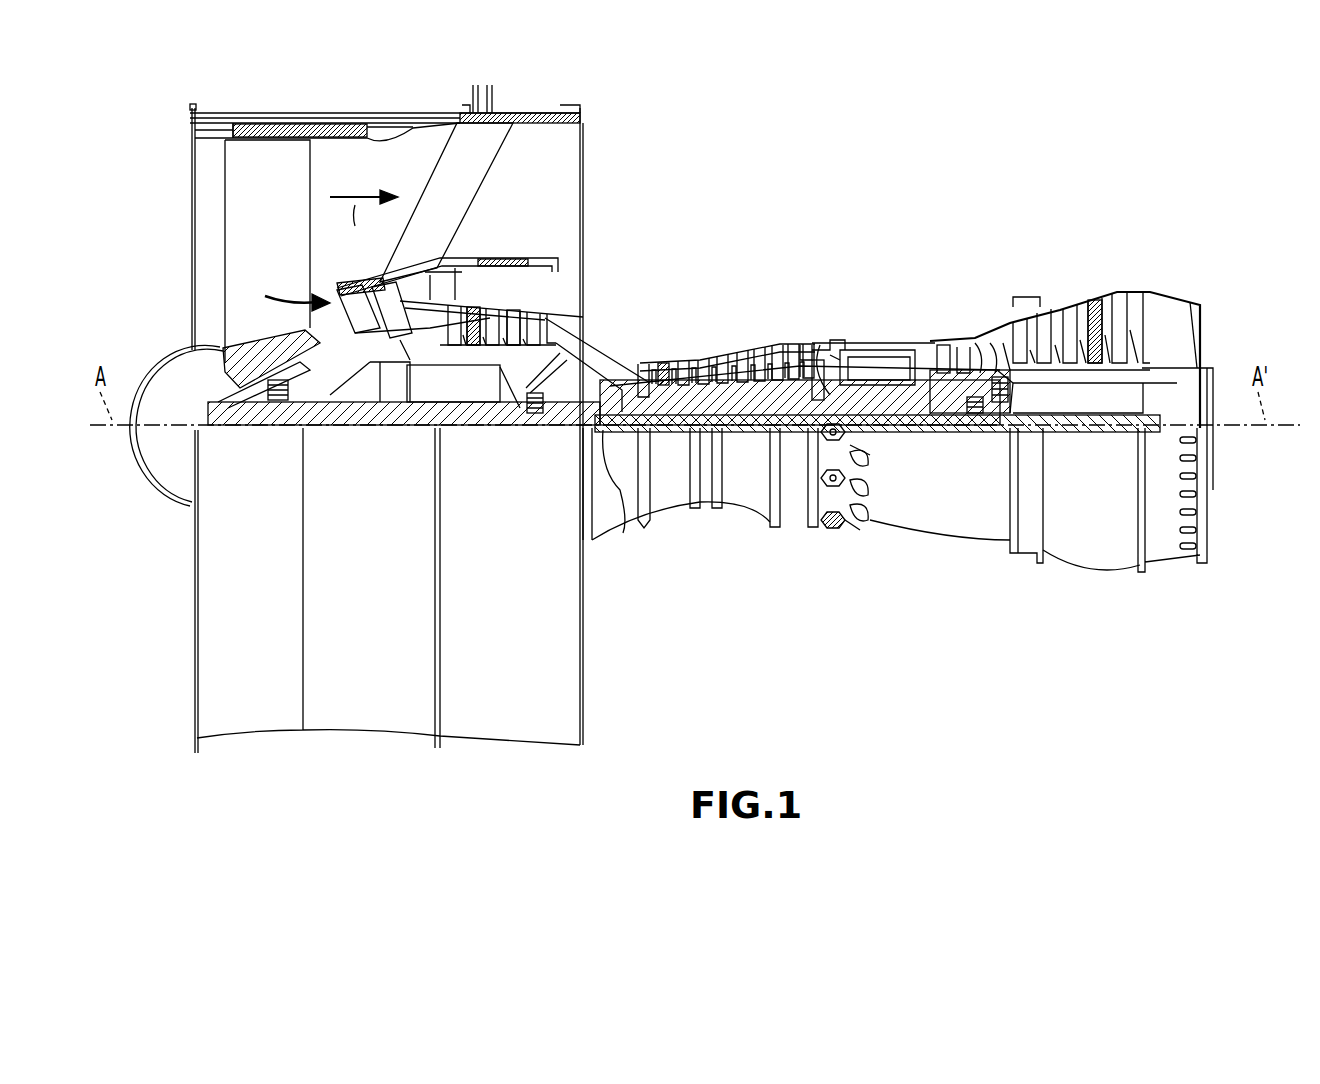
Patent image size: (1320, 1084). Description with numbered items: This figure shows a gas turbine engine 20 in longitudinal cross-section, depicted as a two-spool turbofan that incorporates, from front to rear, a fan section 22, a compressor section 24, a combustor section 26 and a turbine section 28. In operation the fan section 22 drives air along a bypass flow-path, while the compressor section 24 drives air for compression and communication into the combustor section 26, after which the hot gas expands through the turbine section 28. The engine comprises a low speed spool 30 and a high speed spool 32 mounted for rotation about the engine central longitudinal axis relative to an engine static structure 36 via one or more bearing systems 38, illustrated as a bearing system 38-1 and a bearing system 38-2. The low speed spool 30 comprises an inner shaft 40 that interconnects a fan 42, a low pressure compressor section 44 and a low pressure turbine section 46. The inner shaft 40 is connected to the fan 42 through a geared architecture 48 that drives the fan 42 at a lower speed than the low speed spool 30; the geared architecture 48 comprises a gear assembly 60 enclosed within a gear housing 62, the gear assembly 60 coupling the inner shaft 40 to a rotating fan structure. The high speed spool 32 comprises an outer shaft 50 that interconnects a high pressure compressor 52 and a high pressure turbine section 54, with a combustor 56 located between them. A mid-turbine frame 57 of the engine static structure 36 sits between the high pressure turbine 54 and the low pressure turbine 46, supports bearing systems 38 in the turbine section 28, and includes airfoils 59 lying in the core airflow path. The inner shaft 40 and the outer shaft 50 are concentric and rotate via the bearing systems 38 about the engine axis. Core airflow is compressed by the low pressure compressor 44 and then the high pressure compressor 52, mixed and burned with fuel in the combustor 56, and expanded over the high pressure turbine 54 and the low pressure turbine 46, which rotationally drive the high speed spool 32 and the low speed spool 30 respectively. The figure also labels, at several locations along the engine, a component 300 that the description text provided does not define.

The gas turbine engine 20 is at (930, 146).
The fan section 22 is at (428, 99).
The compressor section 24 is at (440, 229).
The combustor section 26 is at (925, 229).
The turbine section 28 is at (1145, 229).
The low speed spool 30 is at (745, 480).
The high speed spool 32 is at (792, 392).
The engine static structure 36 is at (172, 749).
The bearing system 38 is at (977, 418).
The bearing system 38-1 is at (278, 405).
The bearing system 38-2 is at (533, 418).
The inner shaft 40 is at (623, 500).
The fan 42 is at (271, 244).
The low pressure compressor section 44 is at (520, 318).
The low pressure turbine section 46 is at (1073, 310).
The geared architecture 48 is at (400, 462).
The outer shaft 50 is at (867, 407).
The high pressure compressor 52 is at (742, 356).
The high pressure turbine section 54 is at (940, 344).
The combustor 56 is at (868, 352).
The mid-turbine frame 57 is at (990, 340).
The airfoils 59 is at (990, 348).
The gear assembly 60 is at (402, 406).
The gear housing 62 is at (396, 370).
The seal assembly 300 is at (455, 304).